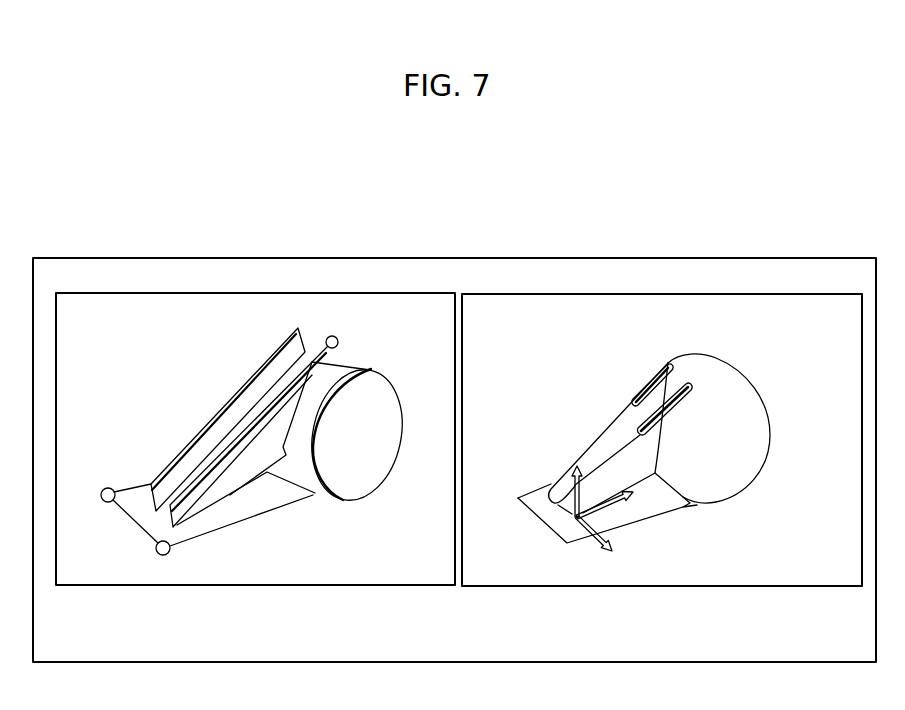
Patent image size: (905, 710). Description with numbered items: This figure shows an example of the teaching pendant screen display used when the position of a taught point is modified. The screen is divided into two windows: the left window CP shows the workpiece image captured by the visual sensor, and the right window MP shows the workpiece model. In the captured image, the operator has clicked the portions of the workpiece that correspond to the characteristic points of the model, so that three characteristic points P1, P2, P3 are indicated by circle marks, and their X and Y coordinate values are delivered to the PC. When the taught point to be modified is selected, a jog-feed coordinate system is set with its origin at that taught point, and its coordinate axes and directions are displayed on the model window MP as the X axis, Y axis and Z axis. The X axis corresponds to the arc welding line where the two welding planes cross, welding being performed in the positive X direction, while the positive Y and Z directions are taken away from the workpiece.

The captured picture (camera image) CP is at (248, 293).
The model picture (3D model image) MP is at (617, 295).
The characteristic point P1 is at (170, 550).
The characteristic point P2 is at (338, 343).
The characteristic point P3 is at (110, 489).
The X axis X is at (614, 505).
The Y axis Y is at (569, 484).
The Z axis Z is at (605, 533).